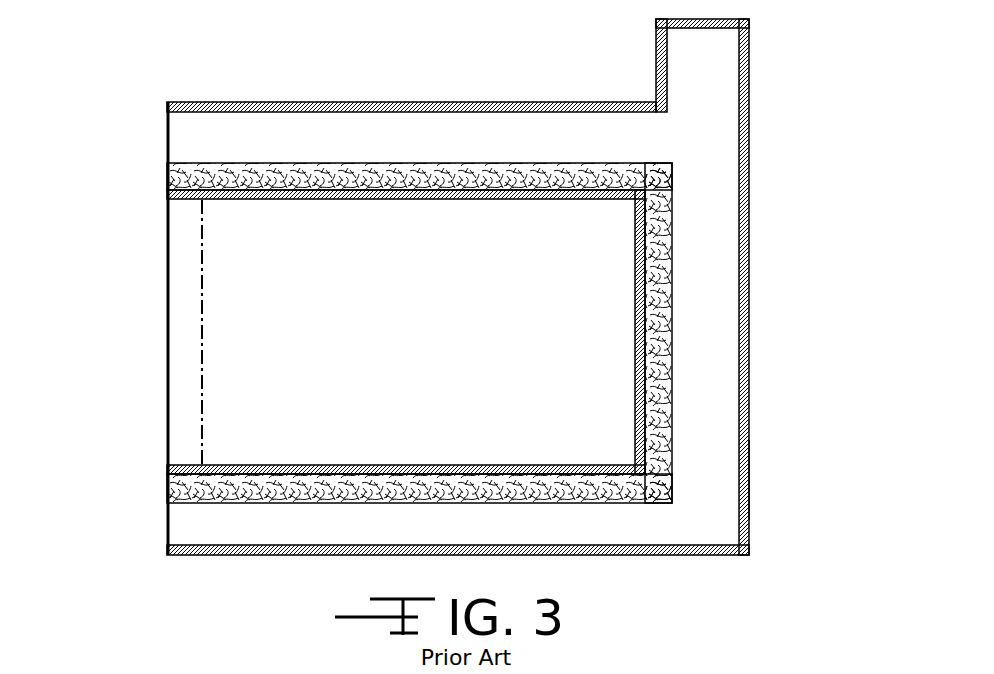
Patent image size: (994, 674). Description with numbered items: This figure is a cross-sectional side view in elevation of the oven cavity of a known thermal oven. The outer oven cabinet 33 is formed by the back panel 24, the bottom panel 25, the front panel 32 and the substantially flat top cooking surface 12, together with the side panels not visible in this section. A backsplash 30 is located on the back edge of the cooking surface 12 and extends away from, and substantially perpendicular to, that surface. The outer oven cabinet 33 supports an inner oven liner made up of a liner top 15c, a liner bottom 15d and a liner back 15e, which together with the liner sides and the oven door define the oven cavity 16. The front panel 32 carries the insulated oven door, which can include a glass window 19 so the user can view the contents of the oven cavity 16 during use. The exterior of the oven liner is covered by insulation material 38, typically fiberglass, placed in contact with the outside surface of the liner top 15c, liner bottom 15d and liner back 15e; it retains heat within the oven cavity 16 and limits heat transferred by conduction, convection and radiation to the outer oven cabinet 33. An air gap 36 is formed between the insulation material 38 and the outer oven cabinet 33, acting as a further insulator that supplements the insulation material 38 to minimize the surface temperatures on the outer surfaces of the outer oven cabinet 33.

The top cooking surface 12 is at (353, 102).
The air gap 36 is at (465, 130).
The insulation material 38 is at (232, 168).
The backsplash 30 is at (708, 69).
The back panel 24 is at (750, 340).
The outer oven cabinet 33 is at (762, 478).
The bottom panel 25 is at (622, 555).
The liner top 15c is at (255, 200).
The liner bottom 15d is at (323, 466).
The liner back 15e is at (636, 351).
The oven cavity 16 is at (238, 331).
The window 19 is at (167, 432).
The front panel 32 is at (166, 455).